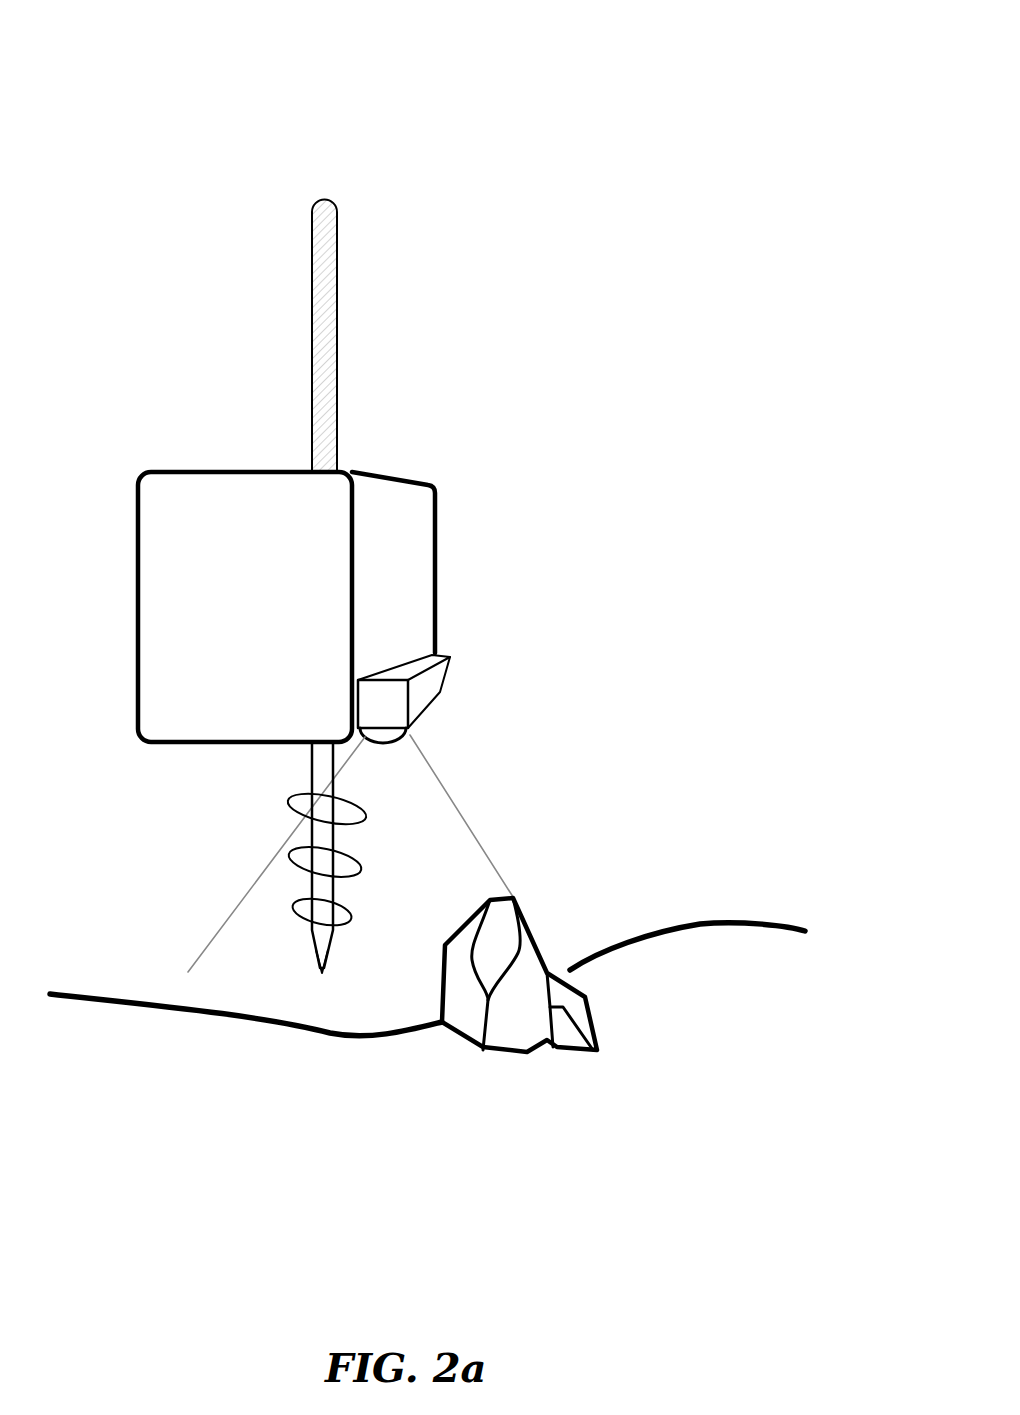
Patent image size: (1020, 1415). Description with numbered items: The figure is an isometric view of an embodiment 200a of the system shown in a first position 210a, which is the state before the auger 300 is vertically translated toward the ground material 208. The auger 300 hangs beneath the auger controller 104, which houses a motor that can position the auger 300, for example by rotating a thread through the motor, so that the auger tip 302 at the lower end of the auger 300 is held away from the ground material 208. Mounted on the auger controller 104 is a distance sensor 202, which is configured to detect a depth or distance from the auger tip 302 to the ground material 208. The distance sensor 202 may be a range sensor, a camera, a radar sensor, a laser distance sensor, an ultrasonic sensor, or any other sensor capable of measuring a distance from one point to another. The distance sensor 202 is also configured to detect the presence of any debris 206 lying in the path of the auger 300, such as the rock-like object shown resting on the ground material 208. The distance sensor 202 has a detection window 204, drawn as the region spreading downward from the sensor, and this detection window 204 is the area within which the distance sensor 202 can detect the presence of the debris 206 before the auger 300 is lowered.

The embodiment of the system 200a is at (812, 69).
The first position 210a is at (318, 203).
The auger controller 104 is at (432, 483).
The distance sensor 202 is at (433, 681).
The detection window 204 is at (453, 812).
The debris 206 is at (535, 915).
The ground material 208 is at (705, 923).
The auger 300 is at (325, 800).
The auger tip 302 is at (322, 975).